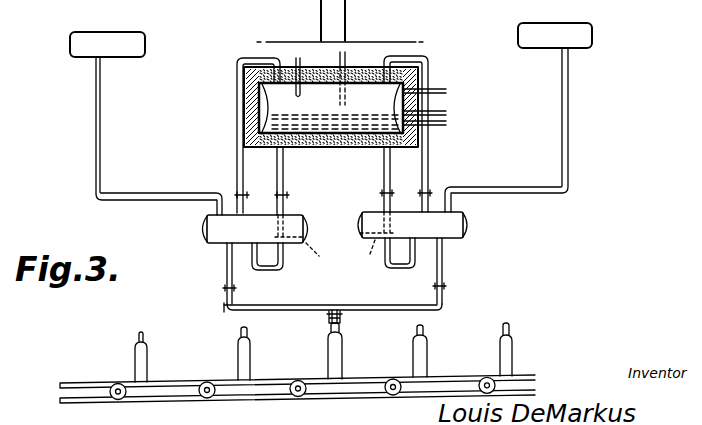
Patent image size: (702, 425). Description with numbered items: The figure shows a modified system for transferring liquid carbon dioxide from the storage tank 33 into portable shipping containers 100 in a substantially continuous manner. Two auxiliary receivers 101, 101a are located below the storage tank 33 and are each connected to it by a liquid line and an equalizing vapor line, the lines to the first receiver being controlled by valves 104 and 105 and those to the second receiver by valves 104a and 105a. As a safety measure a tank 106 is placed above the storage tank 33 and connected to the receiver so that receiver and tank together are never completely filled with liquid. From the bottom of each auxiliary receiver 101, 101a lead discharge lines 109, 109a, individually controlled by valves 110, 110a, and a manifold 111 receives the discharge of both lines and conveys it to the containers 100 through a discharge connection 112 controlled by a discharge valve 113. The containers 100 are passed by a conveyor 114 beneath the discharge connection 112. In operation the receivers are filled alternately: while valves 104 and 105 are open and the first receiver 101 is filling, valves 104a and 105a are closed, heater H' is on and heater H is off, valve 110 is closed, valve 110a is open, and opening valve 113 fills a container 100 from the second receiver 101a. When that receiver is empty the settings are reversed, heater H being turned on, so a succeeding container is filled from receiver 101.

The storage tank 33 is at (396, 91).
The portable container 100 is at (343, 357).
The auxiliary receiver 101 is at (255, 229).
The auxiliary receiver 101a is at (412, 225).
The valve 104 is at (291, 195).
The valve 104a is at (394, 192).
The valve 105 is at (258, 188).
The valve 105a is at (440, 192).
The tank 106 is at (108, 34).
The discharge line 109 is at (226, 277).
The discharge line 109a is at (444, 267).
The valve 110 is at (240, 289).
The valve 110a is at (448, 286).
The manifold 111 is at (308, 305).
The discharge connection 112 is at (343, 314).
The discharge valve 113 is at (346, 322).
The conveyor 114 is at (306, 398).
The heater H is at (317, 254).
The heater H' is at (368, 254).